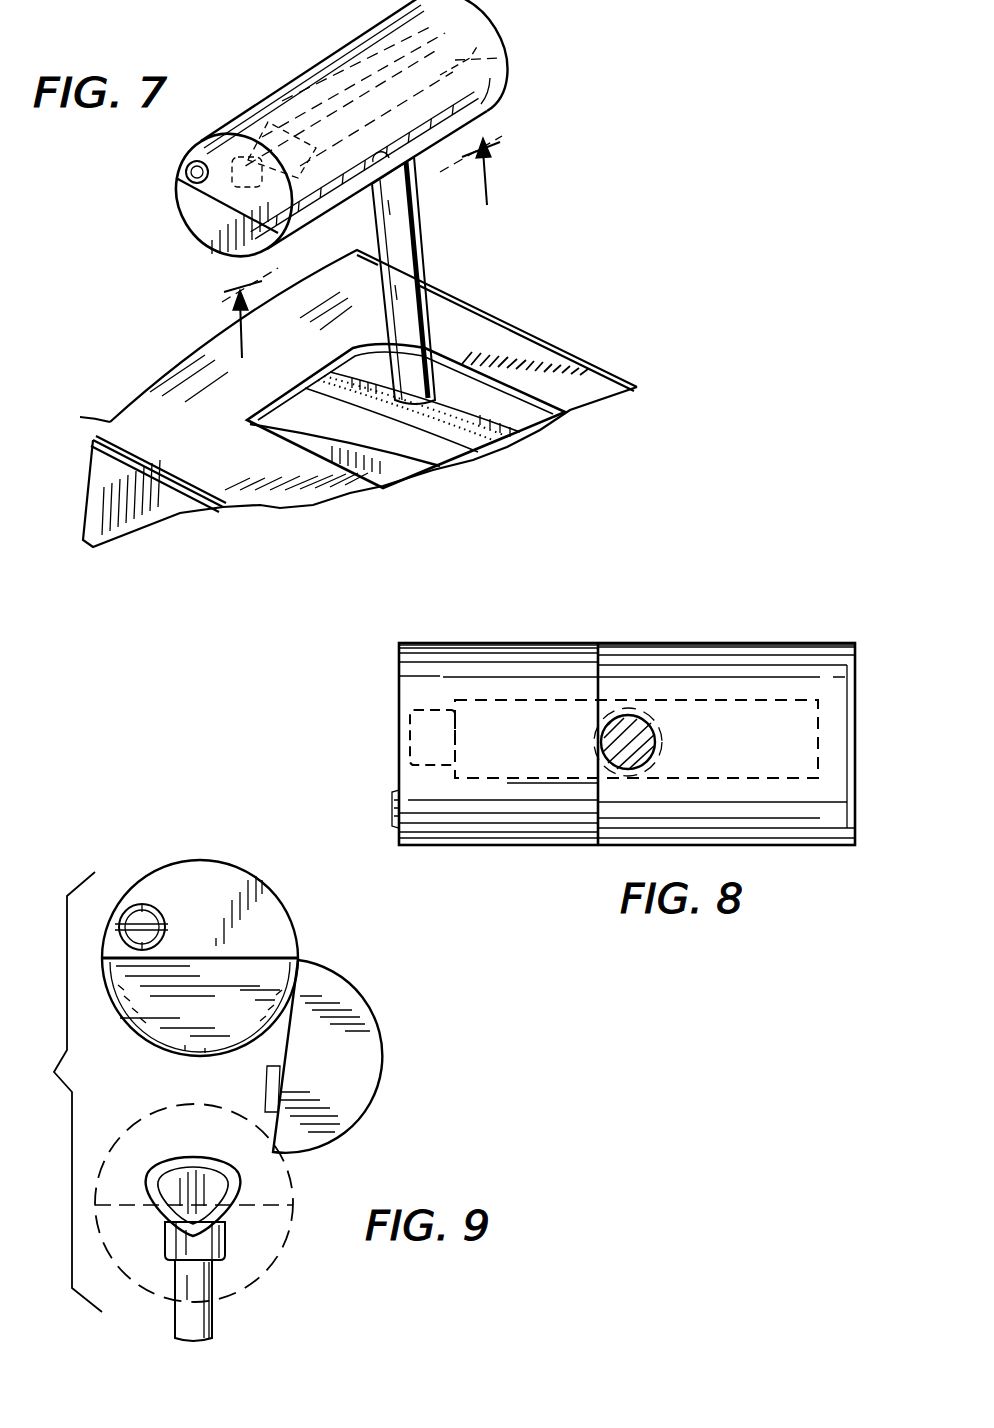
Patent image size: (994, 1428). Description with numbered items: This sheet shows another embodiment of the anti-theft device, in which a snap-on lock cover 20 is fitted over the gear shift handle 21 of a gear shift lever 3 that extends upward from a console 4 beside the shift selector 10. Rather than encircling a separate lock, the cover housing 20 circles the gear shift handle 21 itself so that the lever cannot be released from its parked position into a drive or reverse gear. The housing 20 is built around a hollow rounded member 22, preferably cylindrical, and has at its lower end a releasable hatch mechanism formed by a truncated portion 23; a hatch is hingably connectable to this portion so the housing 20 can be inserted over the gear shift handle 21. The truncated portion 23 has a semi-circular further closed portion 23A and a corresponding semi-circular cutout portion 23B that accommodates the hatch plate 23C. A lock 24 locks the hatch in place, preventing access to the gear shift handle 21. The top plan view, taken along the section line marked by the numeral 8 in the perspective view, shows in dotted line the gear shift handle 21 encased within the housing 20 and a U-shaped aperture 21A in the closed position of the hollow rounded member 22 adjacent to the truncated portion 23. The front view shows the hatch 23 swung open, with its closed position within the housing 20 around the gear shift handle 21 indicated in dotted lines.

In FIG. 7, the gear shift lever 3 is at (420, 256).
In FIG. 8, the gear shift lever 3 is at (630, 714).
In FIG. 9, the gear shift lever 3 is at (204, 1320).
In FIG. 7, the console 4 is at (118, 422).
In FIG. 7, the forked end 8 is at (366, 269).
In FIG. 7, the shift selector 10 is at (400, 466).
In FIG. 7, the snap-on lock cover 20 is at (500, 93).
In FIG. 8, the snap-on lock cover 20 is at (627, 744).
In FIG. 9, the snap-on lock cover 20 is at (202, 866).
In FIG. 7, the gear shift handle 21 is at (509, 68).
In FIG. 8, the gear shift handle 21 is at (755, 715).
In FIG. 9, the gear shift handle 21 is at (232, 1205).
In FIG. 8, the U-shaped aperture 21A is at (656, 705).
In FIG. 7, the hollow rounded member 22 is at (472, 1).
In FIG. 8, the hollow rounded member 22 is at (506, 643).
In FIG. 7, the truncated portion 23 is at (220, 236).
In FIG. 7, the semi-circular further closed portion 23A is at (203, 152).
In FIG. 9, the semi-circular further closed portion 23A is at (275, 936).
In FIG. 7, the semi-circular cutout portion 23B is at (200, 212).
In FIG. 9, the semi-circular cutout portion 23B is at (186, 1014).
In FIG. 8, the hatch plate 23C is at (416, 675).
In FIG. 9, the hatch plate 23C is at (356, 1003).
In FIG. 7, the lock 24 is at (190, 176).
In FIG. 8, the lock 24 is at (394, 812).
In FIG. 9, the lock 24 is at (140, 905).